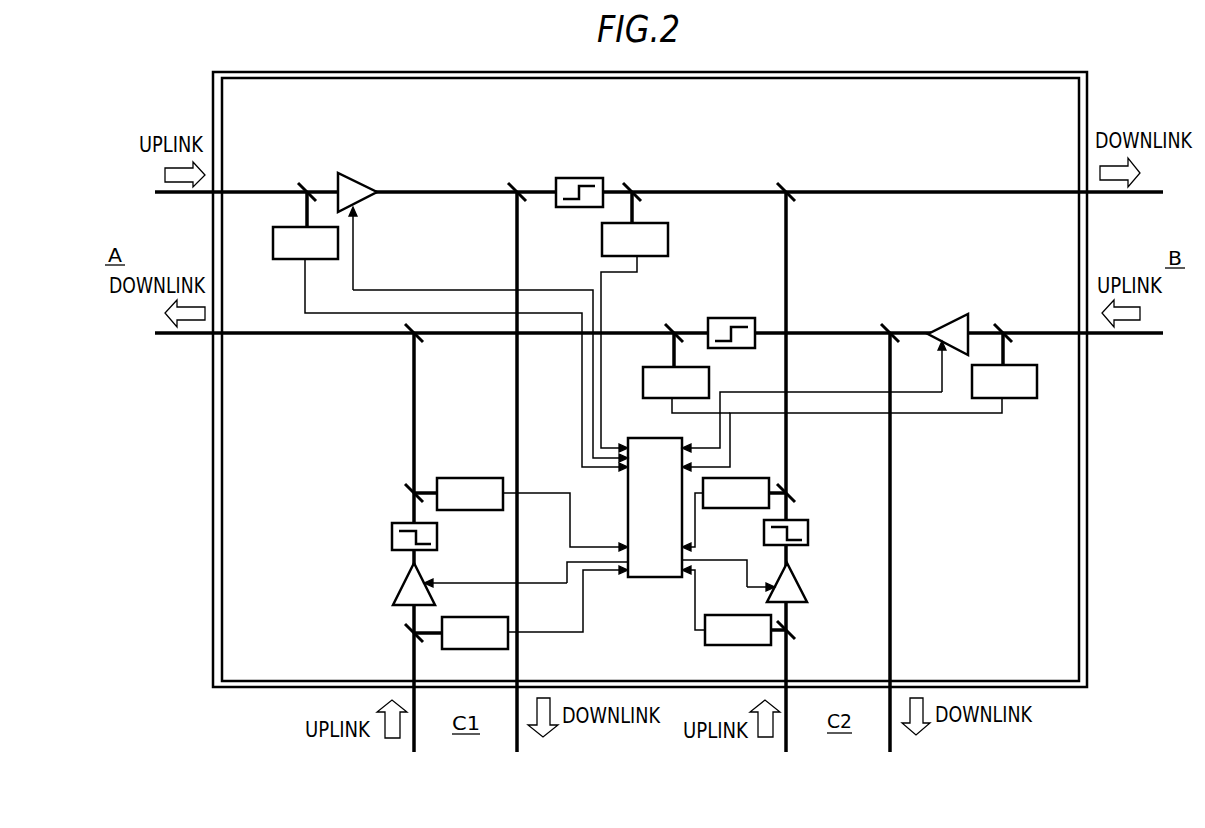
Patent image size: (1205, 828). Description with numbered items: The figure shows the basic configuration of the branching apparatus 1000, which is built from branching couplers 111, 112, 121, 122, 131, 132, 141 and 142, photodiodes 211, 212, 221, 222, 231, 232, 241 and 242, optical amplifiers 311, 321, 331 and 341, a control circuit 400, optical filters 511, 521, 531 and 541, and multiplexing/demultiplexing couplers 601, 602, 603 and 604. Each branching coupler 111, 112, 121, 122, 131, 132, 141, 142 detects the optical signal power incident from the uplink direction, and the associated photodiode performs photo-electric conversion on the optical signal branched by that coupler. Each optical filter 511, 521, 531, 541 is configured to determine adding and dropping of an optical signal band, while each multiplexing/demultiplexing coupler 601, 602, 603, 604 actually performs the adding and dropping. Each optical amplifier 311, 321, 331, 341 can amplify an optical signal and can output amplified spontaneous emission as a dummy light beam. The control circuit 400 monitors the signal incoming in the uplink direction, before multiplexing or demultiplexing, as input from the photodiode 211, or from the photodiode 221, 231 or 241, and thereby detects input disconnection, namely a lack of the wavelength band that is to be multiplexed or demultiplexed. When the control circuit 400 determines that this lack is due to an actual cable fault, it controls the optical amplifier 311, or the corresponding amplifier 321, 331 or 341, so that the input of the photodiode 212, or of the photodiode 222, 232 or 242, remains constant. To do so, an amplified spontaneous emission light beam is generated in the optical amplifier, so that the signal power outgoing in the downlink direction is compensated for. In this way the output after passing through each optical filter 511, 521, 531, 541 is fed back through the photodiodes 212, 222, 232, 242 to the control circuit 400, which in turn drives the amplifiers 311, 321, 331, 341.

The branching apparatus 1000 is at (1008, 71).
The branching coupler 111 is at (313, 165).
The branching coupler 112 is at (637, 185).
The branching coupler 121 is at (1012, 325).
The branching coupler 122 is at (677, 325).
The branching coupler 131 is at (793, 632).
The branching coupler 132 is at (793, 498).
The branching coupler 141 is at (408, 633).
The branching coupler 142 is at (410, 490).
The multiplexing/demultiplexing coupler 601 is at (522, 166).
The multiplexing/demultiplexing coupler 602 is at (782, 187).
The multiplexing/demultiplexing coupler 603 is at (893, 325).
The multiplexing/demultiplexing coupler 604 is at (420, 343).
The optical amplifier 311 is at (372, 180).
The optical amplifier 321 is at (953, 316).
The optical amplifier 331 is at (800, 588).
The optical amplifier 341 is at (400, 586).
The optical filter 511 is at (603, 157).
The optical filter 521 is at (743, 318).
The optical filter 531 is at (810, 532).
The optical filter 541 is at (392, 532).
The photodiode 211 is at (293, 260).
The photodiode 212 is at (668, 238).
The photodiode 221 is at (1020, 400).
The photodiode 222 is at (643, 378).
The photodiode 231 is at (705, 640).
The photodiode 232 is at (740, 477).
The photodiode 241 is at (453, 617).
The photodiode 242 is at (467, 477).
The control circuit 400 is at (667, 579).